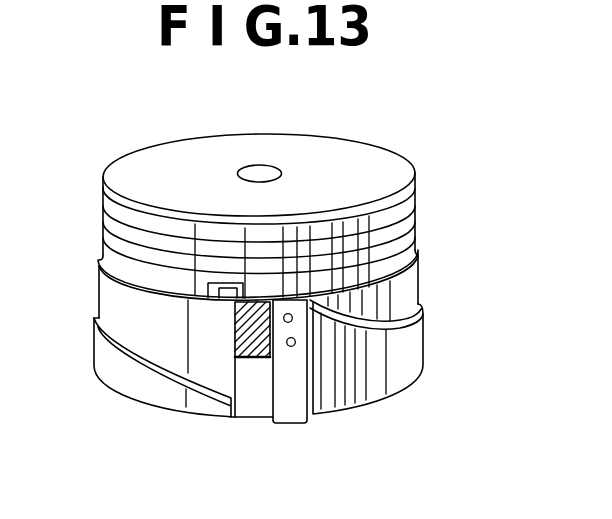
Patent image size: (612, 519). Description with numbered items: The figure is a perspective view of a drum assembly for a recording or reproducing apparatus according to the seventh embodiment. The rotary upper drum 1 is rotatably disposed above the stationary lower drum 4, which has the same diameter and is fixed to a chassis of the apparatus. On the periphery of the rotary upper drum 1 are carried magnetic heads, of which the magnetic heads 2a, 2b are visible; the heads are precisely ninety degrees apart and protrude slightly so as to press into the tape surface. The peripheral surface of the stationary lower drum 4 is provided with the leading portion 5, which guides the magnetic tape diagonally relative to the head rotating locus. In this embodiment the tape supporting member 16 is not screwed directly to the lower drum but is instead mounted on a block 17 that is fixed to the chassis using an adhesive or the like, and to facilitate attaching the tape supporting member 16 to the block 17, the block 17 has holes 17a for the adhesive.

The rotary upper drum 1 is at (372, 162).
The magnetic head 2a is at (222, 299).
The magnetic head 2b is at (419, 253).
The stationary lower drum 4 is at (405, 292).
The leading portion 5 is at (400, 370).
The tape supporting member 16 is at (247, 359).
The block 17 is at (287, 404).
The holes 17a is at (292, 323).